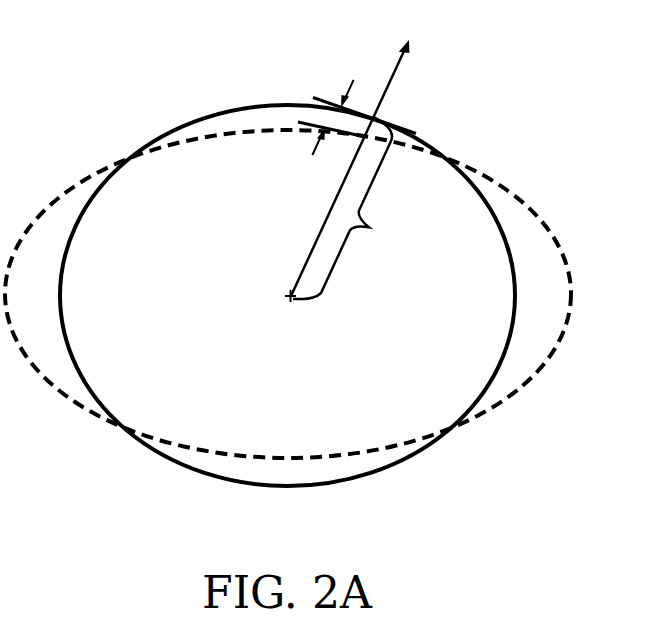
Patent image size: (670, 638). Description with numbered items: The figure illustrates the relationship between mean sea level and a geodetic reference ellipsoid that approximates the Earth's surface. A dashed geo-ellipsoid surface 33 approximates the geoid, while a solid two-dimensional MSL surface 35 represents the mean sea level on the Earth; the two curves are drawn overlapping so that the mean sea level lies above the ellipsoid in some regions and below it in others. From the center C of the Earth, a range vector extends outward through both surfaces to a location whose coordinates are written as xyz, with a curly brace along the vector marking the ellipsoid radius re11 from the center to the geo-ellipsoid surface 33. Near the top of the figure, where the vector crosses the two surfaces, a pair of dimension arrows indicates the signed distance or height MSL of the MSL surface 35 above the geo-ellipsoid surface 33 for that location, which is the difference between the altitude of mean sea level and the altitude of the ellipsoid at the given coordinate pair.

The geo-ellipsoid surface 33 is at (495, 412).
The MSL surface 35 is at (375, 475).
The center of the Earth C is at (279, 305).
The location coordinates xyz is at (397, 155).
The signed distance Δ MSL is at (357, 93).
The ellipsoid radius re11 is at (364, 236).